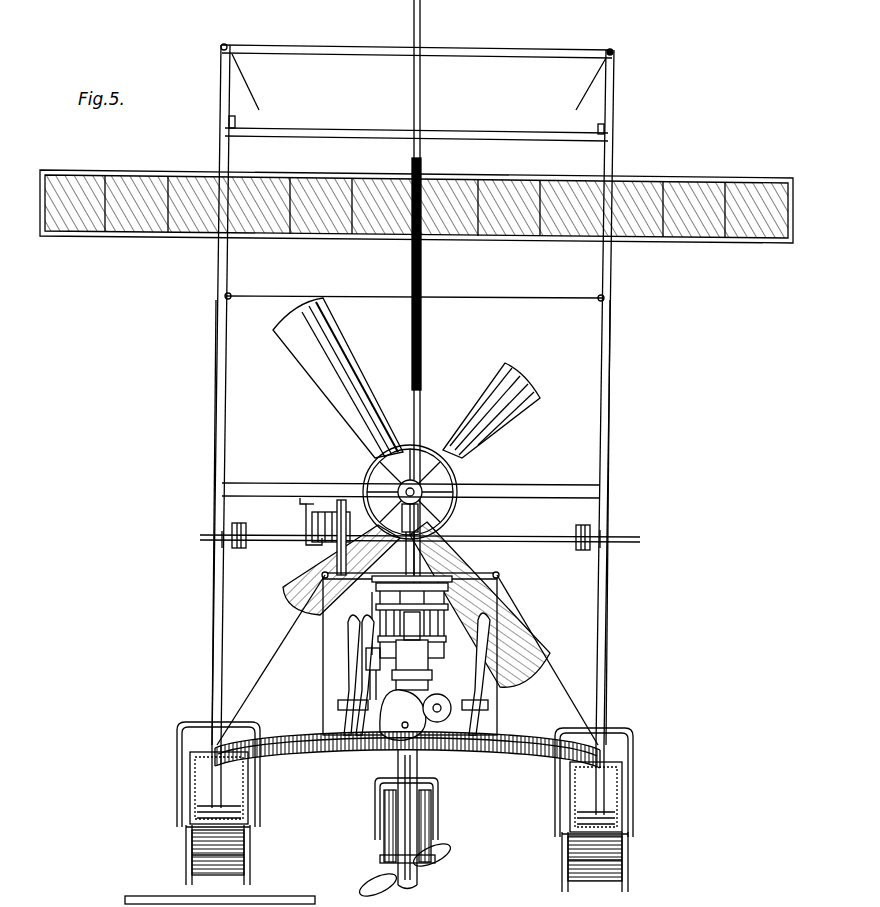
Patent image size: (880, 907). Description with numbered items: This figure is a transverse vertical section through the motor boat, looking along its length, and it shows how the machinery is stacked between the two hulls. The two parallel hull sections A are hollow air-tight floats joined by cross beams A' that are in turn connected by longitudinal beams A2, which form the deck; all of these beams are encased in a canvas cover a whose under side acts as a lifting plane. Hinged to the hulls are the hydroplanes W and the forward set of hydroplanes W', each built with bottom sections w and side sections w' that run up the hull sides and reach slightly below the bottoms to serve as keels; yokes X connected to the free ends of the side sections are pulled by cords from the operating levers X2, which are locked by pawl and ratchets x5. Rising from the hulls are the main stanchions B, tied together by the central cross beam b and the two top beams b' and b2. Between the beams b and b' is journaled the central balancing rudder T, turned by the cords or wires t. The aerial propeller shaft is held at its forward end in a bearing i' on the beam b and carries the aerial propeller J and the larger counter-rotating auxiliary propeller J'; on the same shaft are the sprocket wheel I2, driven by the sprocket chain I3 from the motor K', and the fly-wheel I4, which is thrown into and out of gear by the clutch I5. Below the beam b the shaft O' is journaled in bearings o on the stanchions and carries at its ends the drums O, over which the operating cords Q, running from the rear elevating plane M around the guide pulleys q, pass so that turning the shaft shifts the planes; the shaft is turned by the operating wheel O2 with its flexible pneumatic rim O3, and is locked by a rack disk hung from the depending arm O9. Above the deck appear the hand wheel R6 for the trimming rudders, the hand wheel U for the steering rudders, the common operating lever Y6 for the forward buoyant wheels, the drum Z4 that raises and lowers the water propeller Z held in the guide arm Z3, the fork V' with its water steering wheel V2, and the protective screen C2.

The top beam b2 is at (520, 46).
The top beam b' is at (416, 124).
The guide pulleys q is at (240, 120).
The rear elevating plane M is at (696, 192).
The balancing rudder T is at (422, 272).
The cords or wires t is at (286, 296).
The aerial propeller J is at (416, 525).
The auxiliary propeller J' is at (338, 378).
The operating cords or wires Q is at (232, 412).
The main stanchions B is at (216, 455).
The bearing i' is at (393, 488).
The fly-wheel I4 is at (452, 480).
The sprocket wheel I2 is at (398, 490).
The clutch I5 is at (430, 520).
The sprocket chain I3 is at (422, 562).
The central cross beam b is at (362, 681).
The shaft O' is at (420, 528).
The bearings o is at (232, 538).
The drums O is at (411, 557).
The flexible pneumatic rim O3 is at (304, 500).
The depending arm O9 is at (312, 520).
The operating wheel O2 is at (336, 560).
The screen C2 is at (499, 608).
The pawl and ratchets x5 is at (345, 690).
The motor K' is at (421, 636).
The hand wheel U is at (428, 625).
The operating hand wheel R6 is at (448, 590).
The drum Z4 is at (356, 623).
The water propeller Z is at (444, 856).
The operating levers X2 is at (350, 648).
The common operating lever Y6 is at (366, 656).
The cross beams A' is at (407, 761).
The longitudinal beams A2 is at (296, 762).
The canvas cover a is at (283, 745).
The yokes X is at (177, 770).
The hull sections A is at (396, 788).
The forward set of hydroplanes W' is at (241, 849).
The hydroplanes W is at (620, 849).
The side sections w' is at (407, 858).
The bottom sections w is at (407, 876).
The guide arm Z3 is at (420, 765).
The fork V' is at (392, 805).
The water steering wheel V2 is at (390, 820).